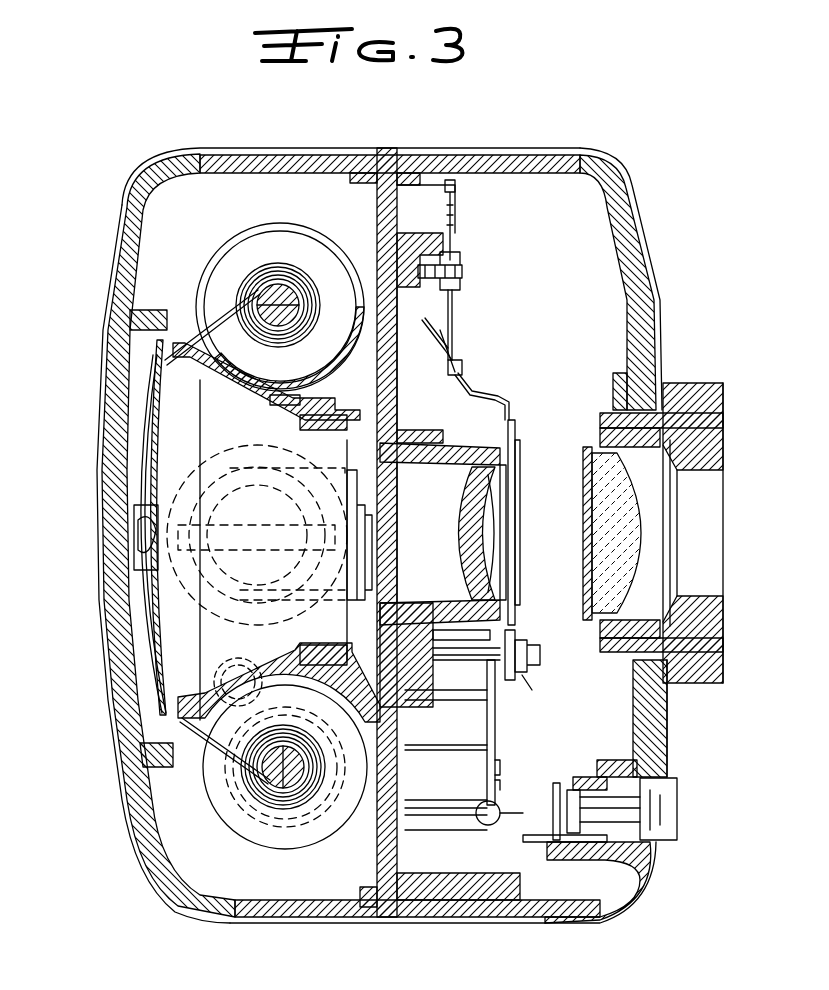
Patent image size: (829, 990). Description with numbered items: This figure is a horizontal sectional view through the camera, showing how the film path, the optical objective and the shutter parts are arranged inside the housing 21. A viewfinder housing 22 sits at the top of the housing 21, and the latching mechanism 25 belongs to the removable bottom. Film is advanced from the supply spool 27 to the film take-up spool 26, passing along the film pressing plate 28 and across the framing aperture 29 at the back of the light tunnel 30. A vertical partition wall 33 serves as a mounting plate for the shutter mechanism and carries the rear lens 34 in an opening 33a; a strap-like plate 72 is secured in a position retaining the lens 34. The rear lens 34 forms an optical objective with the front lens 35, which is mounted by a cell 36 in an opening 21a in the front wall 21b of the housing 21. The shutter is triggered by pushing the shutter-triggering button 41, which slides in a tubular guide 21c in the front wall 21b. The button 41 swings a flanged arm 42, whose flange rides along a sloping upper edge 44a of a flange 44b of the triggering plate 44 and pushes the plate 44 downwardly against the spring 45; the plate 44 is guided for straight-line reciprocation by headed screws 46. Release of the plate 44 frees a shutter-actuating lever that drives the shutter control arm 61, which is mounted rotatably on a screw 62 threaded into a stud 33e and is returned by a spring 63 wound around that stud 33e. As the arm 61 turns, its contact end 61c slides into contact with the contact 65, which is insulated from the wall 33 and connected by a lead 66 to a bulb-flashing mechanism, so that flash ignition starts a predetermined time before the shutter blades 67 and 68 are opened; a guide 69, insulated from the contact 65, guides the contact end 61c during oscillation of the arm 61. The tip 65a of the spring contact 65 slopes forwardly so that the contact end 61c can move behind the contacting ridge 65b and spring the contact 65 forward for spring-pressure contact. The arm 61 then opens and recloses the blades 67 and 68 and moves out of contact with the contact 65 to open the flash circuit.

The housing 21 is at (282, 920).
The opening 21a is at (612, 421).
The front wall 21b is at (632, 320).
The tubular guide 21c is at (620, 790).
The viewfinder housing 22 is at (198, 880).
The latching mechanism 25 is at (399, 562).
The film take-up spool 26 is at (270, 790).
The supply spool 27 is at (275, 285).
The film pressing plate 28 is at (152, 462).
The framing aperture 29 is at (198, 378).
The light tunnel 30 is at (322, 425).
The vertical partition wall 33 is at (385, 225).
The opening 33a is at (468, 490).
The stud 33e is at (453, 680).
The rear lens 34 is at (470, 532).
The front lens 35 is at (636, 541).
The cell 36 is at (604, 443).
The shutter-triggering button 41 is at (655, 800).
The flanged arm 42 is at (550, 842).
The triggering plate 44 is at (497, 752).
The sloping upper edge 44a is at (520, 835).
The flange 44b is at (527, 844).
The spring 45 is at (485, 838).
The headed screws 46 is at (502, 772).
The shutter control arm 61 is at (514, 470).
The contact end 61c is at (446, 368).
The screw 62 is at (541, 660).
The spring 63 is at (528, 655).
The contact 65 is at (455, 345).
The tip 65a is at (463, 366).
The contacting ridge 65b is at (442, 380).
The lead 66 is at (445, 190).
The shutter blade 67 is at (521, 522).
The shutter blade 68 is at (508, 500).
The guide 69 is at (432, 318).
The strap-like plate 72 is at (490, 572).